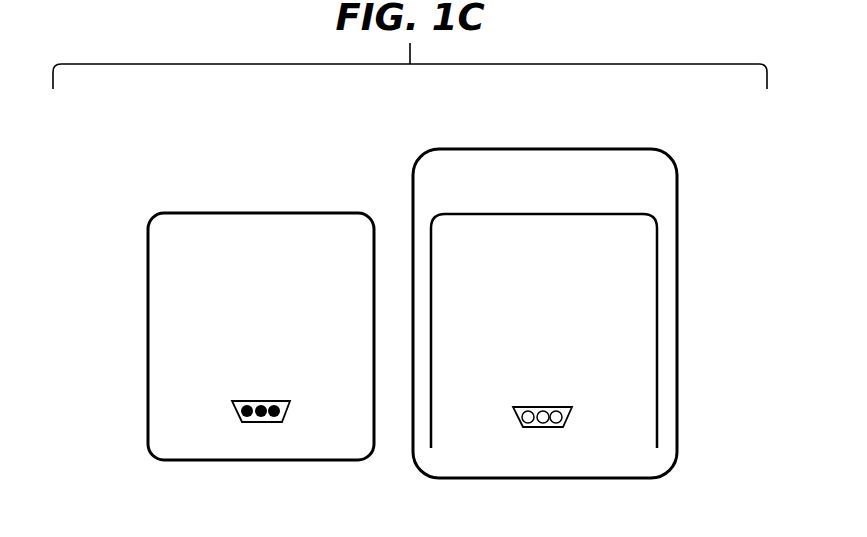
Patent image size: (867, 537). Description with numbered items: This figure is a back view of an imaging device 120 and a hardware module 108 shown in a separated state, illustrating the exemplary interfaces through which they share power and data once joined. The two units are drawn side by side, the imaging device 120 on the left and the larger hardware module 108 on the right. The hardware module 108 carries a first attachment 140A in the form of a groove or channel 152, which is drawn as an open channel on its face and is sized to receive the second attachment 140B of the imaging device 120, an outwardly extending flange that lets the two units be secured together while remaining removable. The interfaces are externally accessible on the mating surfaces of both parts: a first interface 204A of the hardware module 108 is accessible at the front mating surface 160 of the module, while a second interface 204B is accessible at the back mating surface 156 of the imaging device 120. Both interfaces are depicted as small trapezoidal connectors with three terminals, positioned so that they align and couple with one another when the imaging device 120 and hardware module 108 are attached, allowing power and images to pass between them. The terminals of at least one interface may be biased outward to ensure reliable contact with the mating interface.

The hardware module 108 is at (637, 148).
The imaging device 120 is at (248, 213).
The groove or channel 152 is at (494, 214).
The first attachment 140A is at (675, 323).
The second attachment 140B is at (138, 331).
The back mating surface 156 is at (213, 436).
The front mating surface 160 is at (494, 436).
The first interface 204A is at (537, 407).
The second interface 204B is at (256, 401).